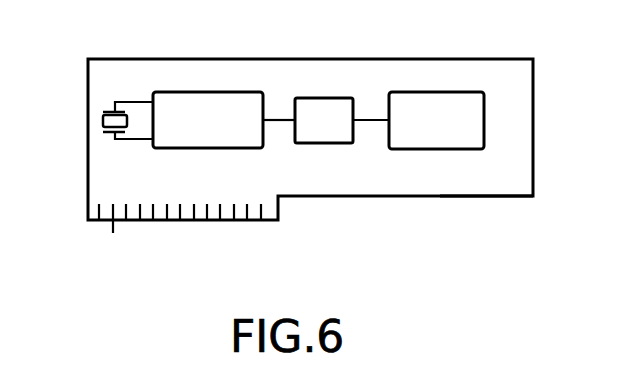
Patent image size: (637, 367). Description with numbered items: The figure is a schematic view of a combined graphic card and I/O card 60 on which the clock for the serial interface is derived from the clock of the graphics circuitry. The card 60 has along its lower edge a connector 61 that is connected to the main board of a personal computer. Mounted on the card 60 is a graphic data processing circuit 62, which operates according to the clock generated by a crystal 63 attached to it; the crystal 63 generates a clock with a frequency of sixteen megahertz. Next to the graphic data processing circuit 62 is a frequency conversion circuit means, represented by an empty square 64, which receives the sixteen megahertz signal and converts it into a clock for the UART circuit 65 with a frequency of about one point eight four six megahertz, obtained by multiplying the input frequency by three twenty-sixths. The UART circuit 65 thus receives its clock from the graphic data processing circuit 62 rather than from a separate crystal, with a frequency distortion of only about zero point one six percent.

The card 60 is at (464, 197).
The connector 61 is at (89, 212).
The graphic data processing circuit 62 is at (205, 92).
The crystal 63 is at (102, 118).
The frequency conversion circuit means 64 is at (330, 98).
The UART circuit 65 is at (435, 92).